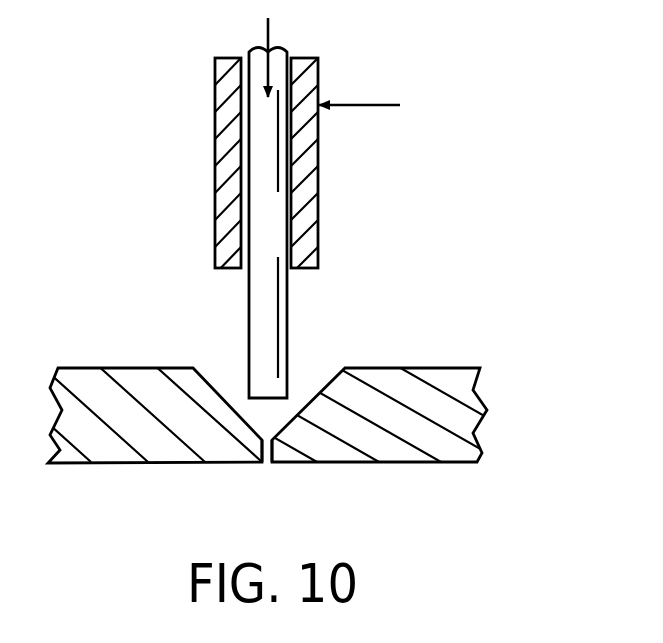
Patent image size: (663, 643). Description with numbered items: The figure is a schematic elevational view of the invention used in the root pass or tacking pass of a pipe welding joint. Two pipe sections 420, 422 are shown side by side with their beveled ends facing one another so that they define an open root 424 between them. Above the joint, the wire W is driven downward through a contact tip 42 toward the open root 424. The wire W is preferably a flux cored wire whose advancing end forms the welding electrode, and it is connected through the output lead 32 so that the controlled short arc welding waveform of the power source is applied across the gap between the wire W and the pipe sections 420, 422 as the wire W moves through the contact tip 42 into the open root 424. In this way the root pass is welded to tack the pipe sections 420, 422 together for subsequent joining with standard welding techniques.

The contact tip 42 is at (222, 100).
The output lead 32 is at (380, 105).
The wire W is at (300, 305).
The pipe section 420 is at (137, 377).
The pipe section 422 is at (390, 378).
The open root 424 is at (265, 463).